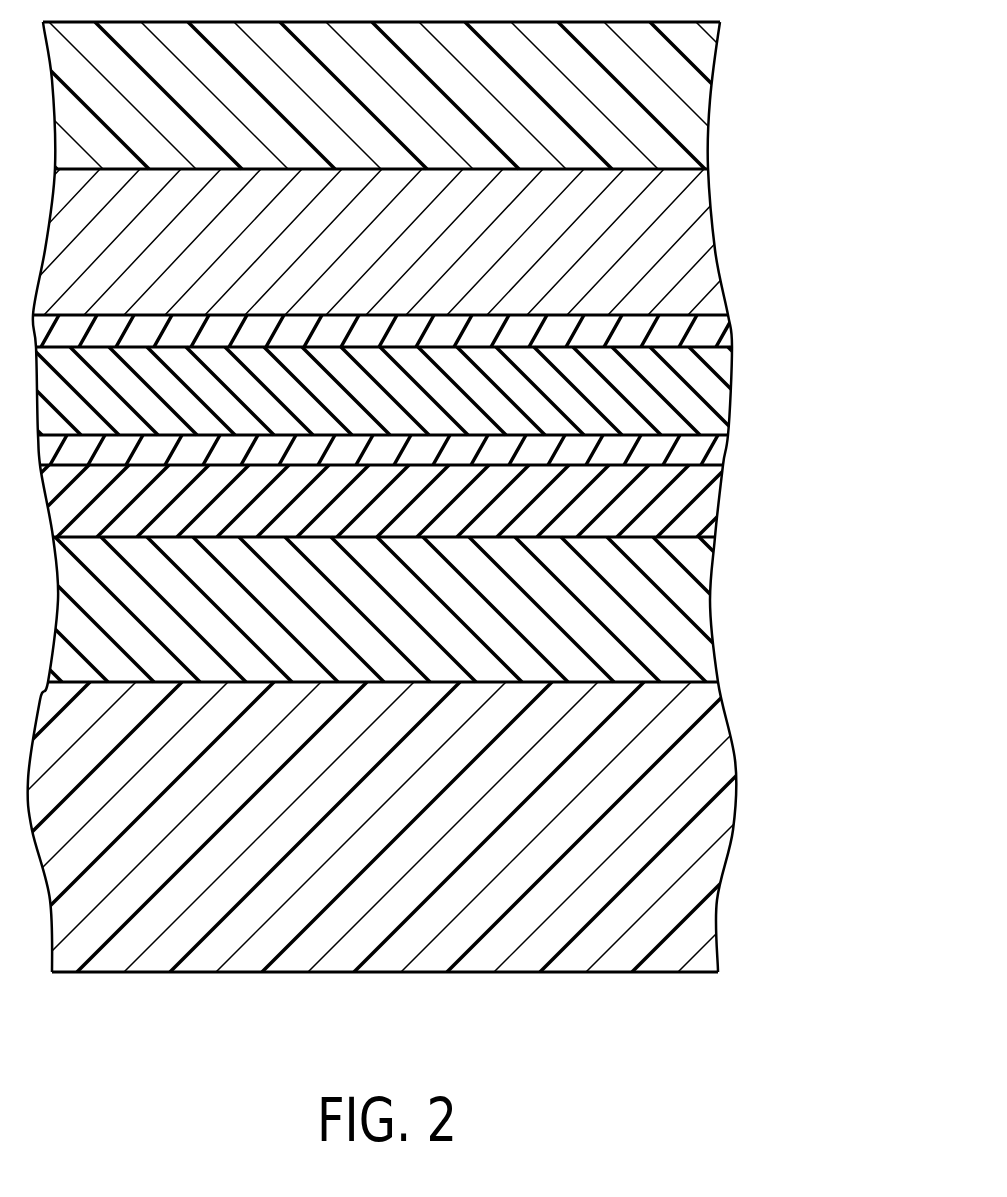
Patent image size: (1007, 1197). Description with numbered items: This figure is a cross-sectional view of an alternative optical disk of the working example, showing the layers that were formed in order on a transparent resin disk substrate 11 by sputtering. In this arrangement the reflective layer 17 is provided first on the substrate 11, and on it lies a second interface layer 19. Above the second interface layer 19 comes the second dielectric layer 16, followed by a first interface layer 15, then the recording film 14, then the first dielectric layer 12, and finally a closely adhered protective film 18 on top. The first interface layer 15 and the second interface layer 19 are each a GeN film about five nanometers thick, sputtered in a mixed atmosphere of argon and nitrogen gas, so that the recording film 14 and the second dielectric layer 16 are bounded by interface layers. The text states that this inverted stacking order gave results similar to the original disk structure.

The disk substrate 11 is at (673, 115).
The reflective layer 17 is at (673, 258).
The second interface layer 19 is at (705, 333).
The second dielectric layer 16 is at (717, 398).
The first interface layer 15 is at (720, 450).
The recording film 14 is at (705, 518).
The first dielectric layer 12 is at (675, 623).
The protective film 18 is at (677, 865).